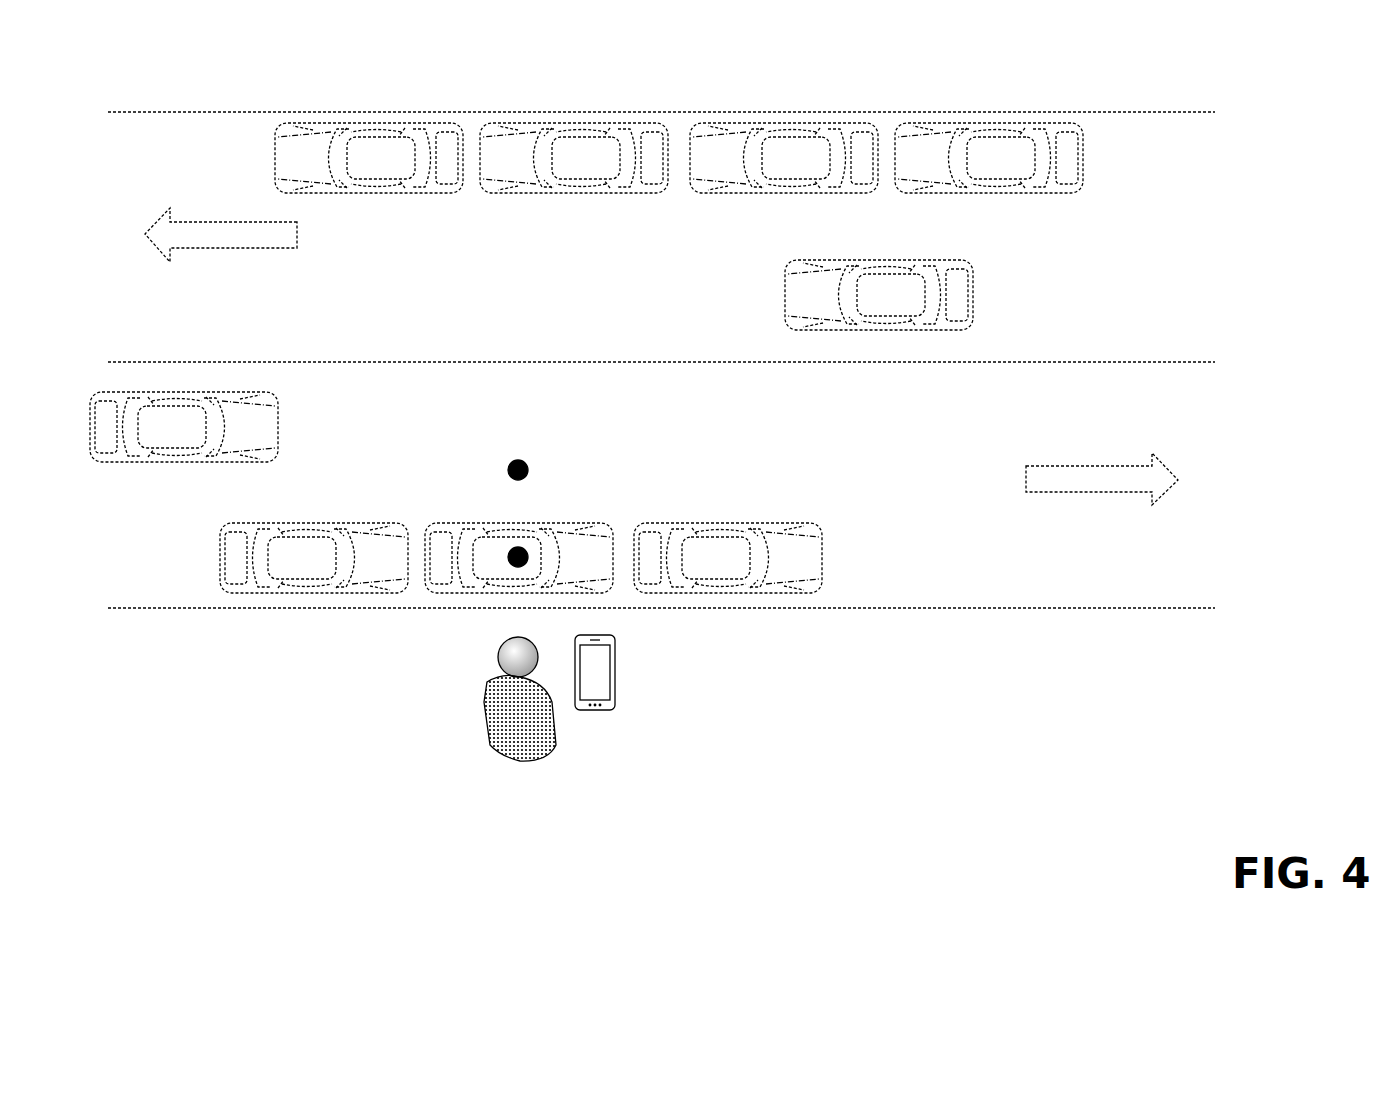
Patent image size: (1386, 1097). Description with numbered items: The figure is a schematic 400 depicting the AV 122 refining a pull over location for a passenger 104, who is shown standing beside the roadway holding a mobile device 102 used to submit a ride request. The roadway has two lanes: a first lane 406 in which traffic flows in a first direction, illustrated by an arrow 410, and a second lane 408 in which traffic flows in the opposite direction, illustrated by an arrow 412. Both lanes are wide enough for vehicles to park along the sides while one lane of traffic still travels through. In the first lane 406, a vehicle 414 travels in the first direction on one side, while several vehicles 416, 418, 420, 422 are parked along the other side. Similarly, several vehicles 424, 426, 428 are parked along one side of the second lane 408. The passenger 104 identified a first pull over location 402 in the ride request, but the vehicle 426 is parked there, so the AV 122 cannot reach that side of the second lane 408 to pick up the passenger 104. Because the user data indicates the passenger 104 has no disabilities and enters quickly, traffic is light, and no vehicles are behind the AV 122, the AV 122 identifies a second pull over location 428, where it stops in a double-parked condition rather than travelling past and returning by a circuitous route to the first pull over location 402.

The schematic 400 is at (425, 86).
The first lane 406 is at (1153, 331).
The second lane 408 is at (1148, 575).
The arrow 410 is at (205, 249).
The arrow 412 is at (1026, 478).
The vehicle 414 is at (916, 307).
The vehicle 416 is at (406, 170).
The vehicle 418 is at (611, 170).
The vehicle 420 is at (821, 170).
The vehicle 422 is at (1026, 170).
The AV 122 is at (186, 439).
The vehicle 424 is at (330, 570).
The vehicle 426 is at (463, 523).
The second pull over location 428 is at (743, 570).
The first pull over location 402 is at (528, 550).
The passenger 104 is at (485, 722).
The mobile device 102 is at (615, 690).